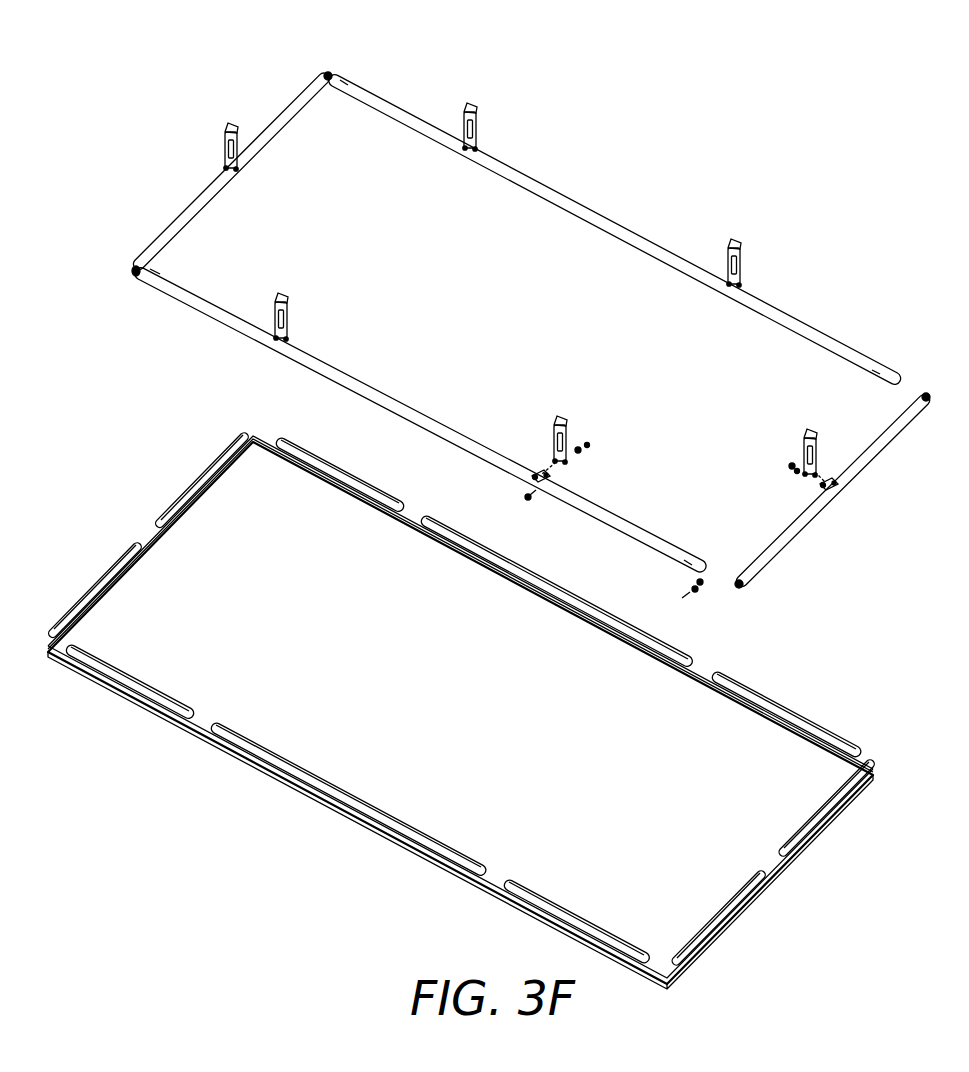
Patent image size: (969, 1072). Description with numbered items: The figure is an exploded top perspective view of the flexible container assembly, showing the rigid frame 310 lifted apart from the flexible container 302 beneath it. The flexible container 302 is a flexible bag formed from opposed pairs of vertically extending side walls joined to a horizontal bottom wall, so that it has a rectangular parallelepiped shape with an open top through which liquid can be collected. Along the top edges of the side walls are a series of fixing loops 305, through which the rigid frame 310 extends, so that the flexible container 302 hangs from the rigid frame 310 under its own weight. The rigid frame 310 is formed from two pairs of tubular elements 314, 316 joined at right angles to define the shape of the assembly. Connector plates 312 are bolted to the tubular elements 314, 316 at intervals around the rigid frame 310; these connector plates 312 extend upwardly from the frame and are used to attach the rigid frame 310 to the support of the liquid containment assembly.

The flexible container 302 is at (824, 688).
The fixing loops 305 is at (190, 490).
The rigid frame 310 is at (381, 80).
The connector plates 312 is at (746, 270).
The tubular elements 314 is at (286, 118).
The tubular elements 316 is at (594, 216).